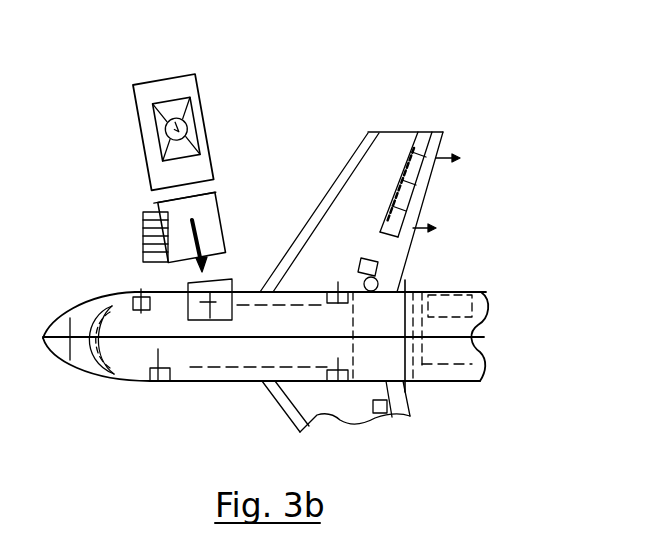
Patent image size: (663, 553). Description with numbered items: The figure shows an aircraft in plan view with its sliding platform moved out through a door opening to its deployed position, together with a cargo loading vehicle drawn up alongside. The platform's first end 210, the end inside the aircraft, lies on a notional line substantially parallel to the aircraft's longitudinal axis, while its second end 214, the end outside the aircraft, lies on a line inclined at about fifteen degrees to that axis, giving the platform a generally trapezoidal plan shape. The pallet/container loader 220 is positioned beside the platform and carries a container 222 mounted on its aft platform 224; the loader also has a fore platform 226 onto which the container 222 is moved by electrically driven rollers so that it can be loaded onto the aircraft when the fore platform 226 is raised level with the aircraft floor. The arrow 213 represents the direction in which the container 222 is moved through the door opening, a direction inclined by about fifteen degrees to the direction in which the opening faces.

The first end 210 is at (207, 318).
The arrow 213 is at (193, 247).
The second end 214 is at (210, 279).
The pallet/container loader 220 is at (109, 128).
The container 222 is at (184, 128).
The aft platform 224 is at (166, 88).
The fore platform 226 is at (143, 214).